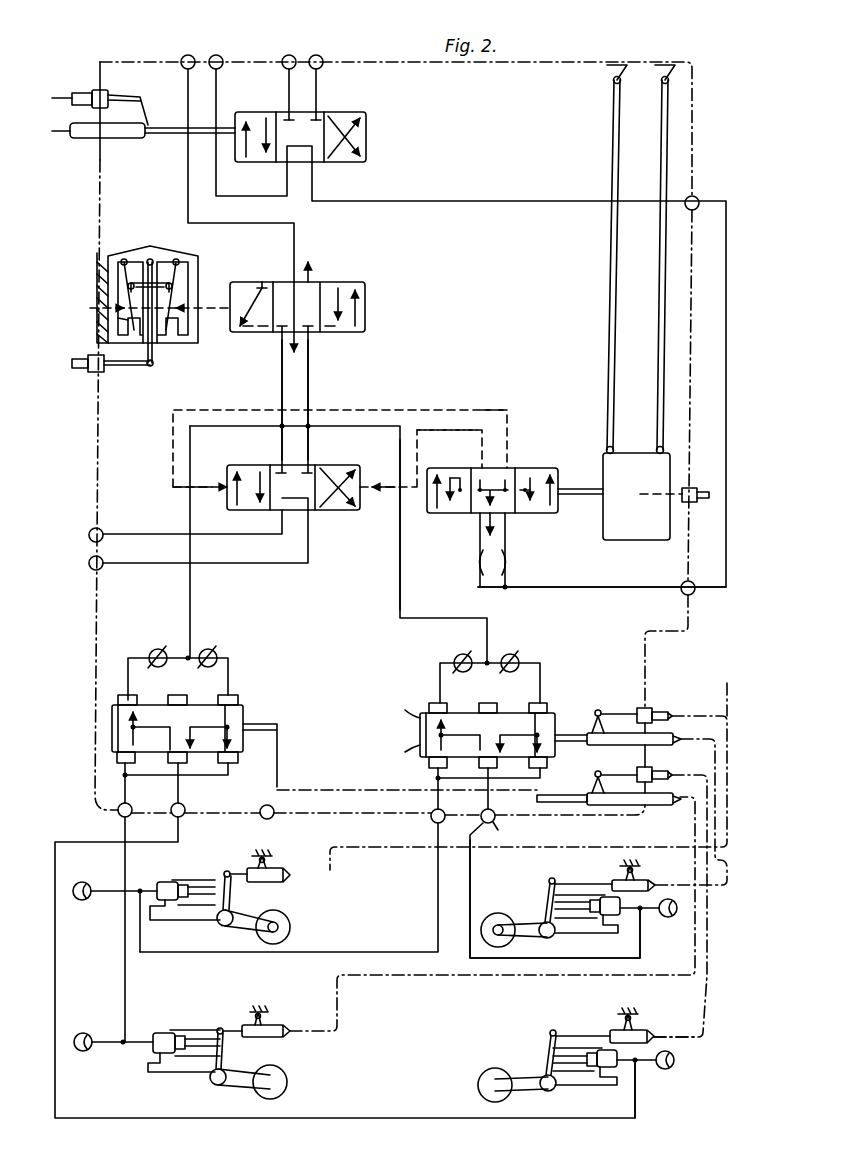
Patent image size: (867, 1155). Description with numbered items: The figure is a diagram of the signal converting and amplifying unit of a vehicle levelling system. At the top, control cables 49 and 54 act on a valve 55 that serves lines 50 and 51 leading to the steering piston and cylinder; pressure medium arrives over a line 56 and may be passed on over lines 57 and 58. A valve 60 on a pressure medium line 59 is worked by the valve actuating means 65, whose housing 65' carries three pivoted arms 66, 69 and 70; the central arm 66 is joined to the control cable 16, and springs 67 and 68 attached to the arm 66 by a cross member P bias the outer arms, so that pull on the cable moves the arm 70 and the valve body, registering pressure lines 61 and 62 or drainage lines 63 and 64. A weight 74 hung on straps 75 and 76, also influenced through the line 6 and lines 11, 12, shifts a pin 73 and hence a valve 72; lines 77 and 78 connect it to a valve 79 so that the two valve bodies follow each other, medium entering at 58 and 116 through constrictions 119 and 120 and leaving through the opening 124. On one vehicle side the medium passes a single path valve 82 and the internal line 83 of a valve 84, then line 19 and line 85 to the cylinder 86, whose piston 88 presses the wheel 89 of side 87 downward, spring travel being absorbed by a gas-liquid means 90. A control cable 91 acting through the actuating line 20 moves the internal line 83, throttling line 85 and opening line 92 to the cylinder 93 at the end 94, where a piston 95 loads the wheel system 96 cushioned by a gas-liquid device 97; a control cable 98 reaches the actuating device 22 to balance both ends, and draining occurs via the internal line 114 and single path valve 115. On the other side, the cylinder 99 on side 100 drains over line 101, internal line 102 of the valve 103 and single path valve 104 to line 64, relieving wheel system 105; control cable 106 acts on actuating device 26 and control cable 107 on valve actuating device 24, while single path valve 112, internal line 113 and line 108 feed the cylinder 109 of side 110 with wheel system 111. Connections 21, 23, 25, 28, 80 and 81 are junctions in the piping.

The line 6 is at (718, 477).
The line 11 is at (718, 477).
The line 12 is at (700, 488).
The control cable 16 is at (90, 372).
The line 19 is at (120, 816).
The actuating line 20 is at (660, 805).
The connection 21 is at (173, 816).
The actuating device 22 is at (652, 777).
The connection 23 is at (432, 821).
The valve actuating device 24 is at (665, 745).
The connection 25 is at (494, 821).
The actuating device 26 is at (652, 710).
The connection 28 is at (272, 818).
The control cable 49 is at (92, 90).
The line 50 is at (285, 55).
The line 51 is at (319, 55).
The control cable 54 is at (98, 140).
The valve 55 is at (366, 137).
The line 56 is at (221, 55).
The line 57 is at (698, 198).
The line 58 is at (694, 593).
The pressure medium line 59 is at (183, 55).
The valve 60 is at (365, 290).
The line 61 is at (282, 385).
The line 62 is at (180, 494).
The drainage line 63 is at (308, 385).
The drainage line 64 is at (397, 560).
The valve actuating means 65 is at (160, 297).
The housing 65' is at (147, 273).
The arm 66 is at (152, 345).
The spring 67 is at (128, 280).
The spring 68 is at (175, 285).
The arm 69 is at (128, 320).
The arm 70 is at (172, 320).
The valve 72 is at (556, 470).
The pin 73 is at (580, 495).
The weight 74 is at (606, 542).
The strap 75 is at (609, 330).
The strap 76 is at (658, 330).
The line 77 is at (440, 430).
The line 78 is at (490, 410).
The valve 79 is at (340, 468).
The connection 80 is at (89, 532).
The connection 81 is at (89, 560).
The single path valve 82 is at (214, 650).
The internal line 83 is at (243, 715).
The valve 84 is at (240, 763).
The line 85 is at (125, 968).
The cylinder 86 is at (160, 1033).
The vehicle side 87 is at (165, 1072).
The piston 88 is at (185, 1036).
The wheel 89 is at (287, 1082).
The gas-liquid means 90 is at (83, 1051).
The control cable 91 is at (290, 787).
The line 92 is at (55, 945).
The cylinder 93 is at (620, 1067).
The vehicle end 94 is at (575, 1085).
The piston 95 is at (565, 1025).
The wheel system 96 is at (480, 1072).
The gas-liquid device 97 is at (668, 1069).
The control cable 98 is at (703, 1040).
The cylinder 99 is at (620, 915).
The vehicle side 100 is at (578, 933).
The line 101 is at (470, 880).
The internal line 102 is at (392, 746).
The valve 103 is at (392, 705).
The single path valve 104 is at (457, 655).
The wheel system 105 is at (505, 945).
The control cable 106 is at (720, 895).
The control cable 107 is at (727, 683).
The line 108 is at (438, 905).
The cylinder 109 is at (165, 882).
The vehicle side 110 is at (170, 920).
The wheel system 111 is at (290, 927).
The single path valve 112 is at (516, 655).
The internal line 113 is at (555, 720).
The internal line 114 is at (128, 700).
The single path valve 115 is at (153, 650).
The inlet 116 is at (548, 590).
The constriction 119 is at (475, 562).
The constriction 120 is at (510, 562).
The opening 124 is at (485, 537).
The cross member P is at (150, 285).